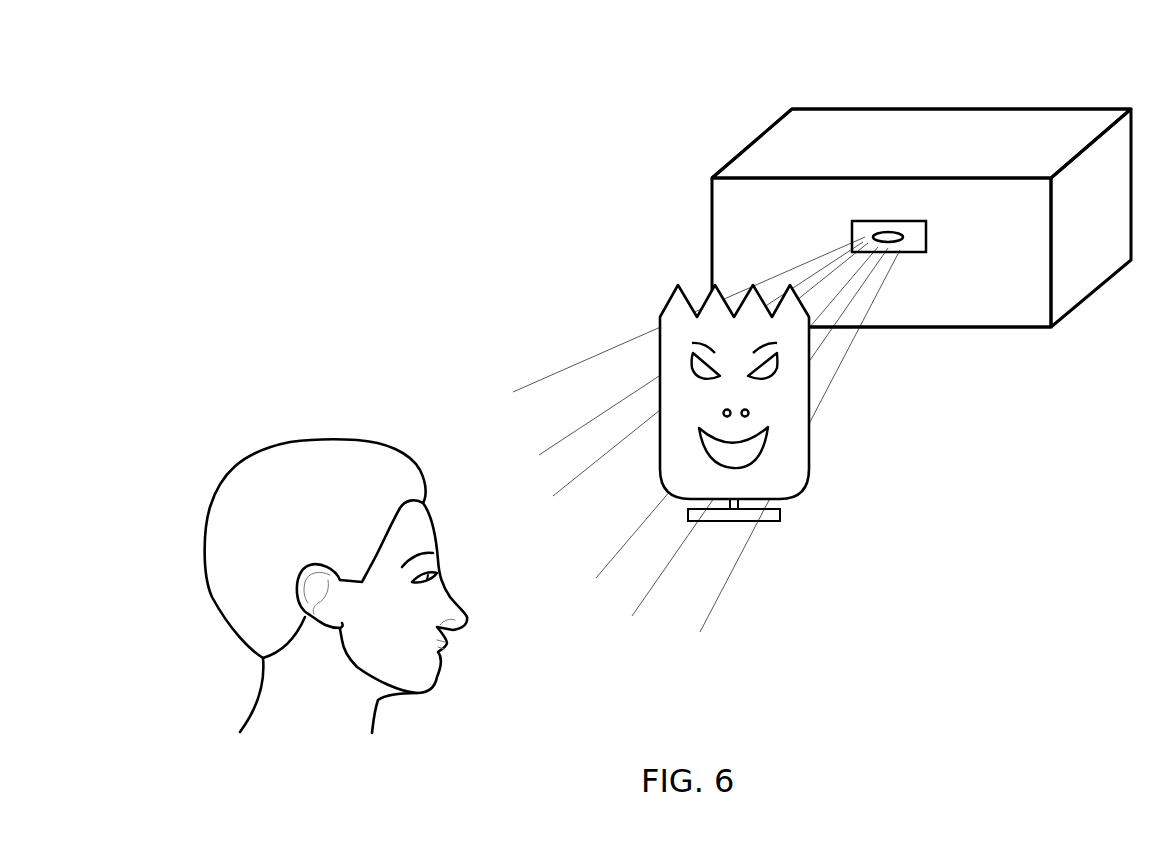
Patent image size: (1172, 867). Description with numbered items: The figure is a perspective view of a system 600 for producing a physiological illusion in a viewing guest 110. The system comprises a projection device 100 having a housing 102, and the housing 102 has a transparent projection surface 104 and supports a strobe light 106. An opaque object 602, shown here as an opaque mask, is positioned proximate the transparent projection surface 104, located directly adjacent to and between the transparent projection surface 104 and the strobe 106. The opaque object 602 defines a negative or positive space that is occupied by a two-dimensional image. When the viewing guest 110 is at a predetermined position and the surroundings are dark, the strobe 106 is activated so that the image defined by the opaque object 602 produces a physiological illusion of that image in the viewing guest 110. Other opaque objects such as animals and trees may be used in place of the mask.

The system for producing a physiological illusion 600 is at (510, 76).
The projection device 100 is at (755, 139).
The housing 102 is at (1049, 107).
The transparent projection surface 104 is at (995, 310).
The strobe light 106 is at (905, 235).
The opaque object 602 is at (790, 484).
The viewing guest 110 is at (300, 455).